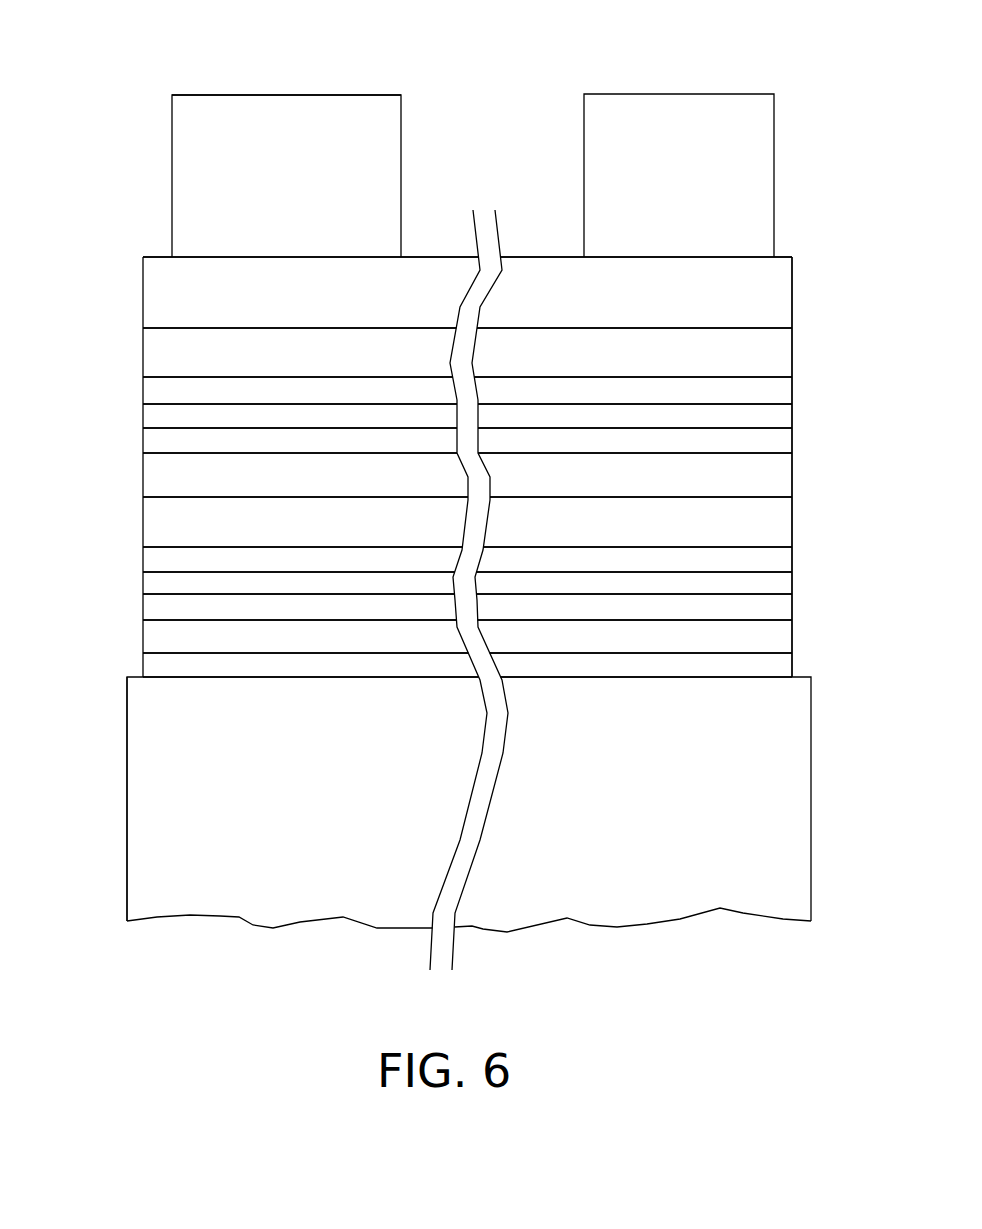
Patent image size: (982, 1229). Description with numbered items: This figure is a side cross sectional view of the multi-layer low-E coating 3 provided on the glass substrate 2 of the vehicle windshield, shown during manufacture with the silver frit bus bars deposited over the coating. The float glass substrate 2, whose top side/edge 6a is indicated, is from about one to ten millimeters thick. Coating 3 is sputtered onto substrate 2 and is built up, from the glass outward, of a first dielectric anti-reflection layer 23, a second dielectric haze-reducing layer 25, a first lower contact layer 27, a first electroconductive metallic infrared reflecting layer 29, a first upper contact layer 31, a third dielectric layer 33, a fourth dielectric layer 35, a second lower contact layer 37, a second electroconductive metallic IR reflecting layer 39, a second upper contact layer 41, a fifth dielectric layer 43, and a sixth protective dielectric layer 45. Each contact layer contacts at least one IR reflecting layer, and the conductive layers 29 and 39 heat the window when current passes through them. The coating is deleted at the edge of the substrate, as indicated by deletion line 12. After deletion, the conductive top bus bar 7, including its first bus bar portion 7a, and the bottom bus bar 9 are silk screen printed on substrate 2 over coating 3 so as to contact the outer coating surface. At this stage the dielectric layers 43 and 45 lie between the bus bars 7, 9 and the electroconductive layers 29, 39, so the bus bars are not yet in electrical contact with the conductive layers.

The glass substrate 2 is at (155, 799).
The low-E coating 3 is at (800, 670).
The top side/edge 6a is at (127, 867).
The top bus bar 7 is at (239, 113).
The first bus bar portion 7a is at (317, 113).
The bottom bus bar 9 is at (632, 102).
The deletion line 12 is at (788, 635).
The first dielectric anti-reflection layer 23 is at (157, 660).
The second dielectric haze-reducing layer 25 is at (150, 640).
The first lower contact layer 27 is at (147, 604).
The first electroconductive metallic infrared reflecting layer 29 is at (155, 583).
The first upper contact layer 31 is at (160, 557).
The third dielectric layer 33 is at (163, 527).
The fourth dielectric layer 35 is at (168, 482).
The second lower contact layer 37 is at (158, 444).
The second electroconductive metallic IR reflecting layer 39 is at (163, 419).
The second upper contact layer 41 is at (163, 391).
The fifth dielectric layer 43 is at (160, 351).
The sixth protective dielectric layer 45 is at (163, 298).